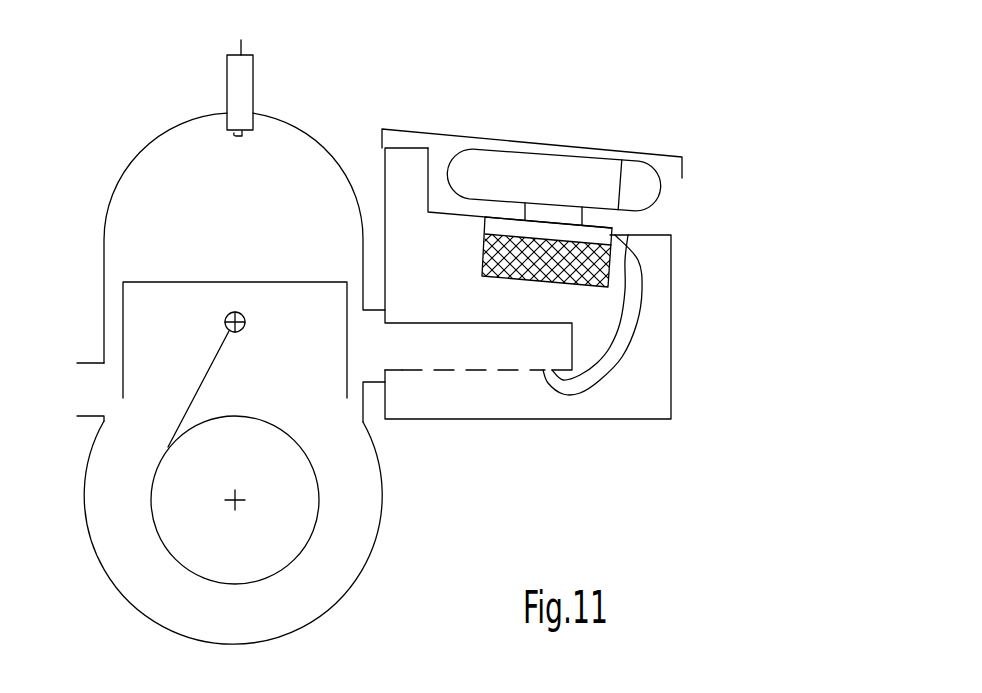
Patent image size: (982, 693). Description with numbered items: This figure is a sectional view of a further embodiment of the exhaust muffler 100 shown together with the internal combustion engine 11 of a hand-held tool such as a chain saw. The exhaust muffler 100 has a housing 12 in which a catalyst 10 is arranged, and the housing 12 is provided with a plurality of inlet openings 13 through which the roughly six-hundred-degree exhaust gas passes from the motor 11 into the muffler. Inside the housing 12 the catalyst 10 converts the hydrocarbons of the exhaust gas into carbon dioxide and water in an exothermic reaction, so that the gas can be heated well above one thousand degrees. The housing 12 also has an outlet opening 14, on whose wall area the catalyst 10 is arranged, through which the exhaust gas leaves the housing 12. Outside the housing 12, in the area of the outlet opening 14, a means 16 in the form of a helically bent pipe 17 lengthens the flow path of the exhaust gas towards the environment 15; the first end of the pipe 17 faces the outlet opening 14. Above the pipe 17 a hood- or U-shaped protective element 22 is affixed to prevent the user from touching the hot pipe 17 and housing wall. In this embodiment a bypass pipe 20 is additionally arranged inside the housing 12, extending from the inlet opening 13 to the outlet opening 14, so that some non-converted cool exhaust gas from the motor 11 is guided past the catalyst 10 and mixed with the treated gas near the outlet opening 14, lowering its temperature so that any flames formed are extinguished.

The exhaust muffler 100 is at (735, 222).
The catalyst 10 is at (605, 285).
The internal combustion engine 11 is at (320, 587).
The housing 12 is at (671, 392).
The inlet openings 13 is at (440, 372).
The outlet opening 14 is at (568, 222).
The environment 15 is at (797, 304).
The means for lengthening the flow path 16 is at (597, 148).
The helical bent pipe 17 is at (532, 156).
The bypass pipe 20 is at (632, 337).
The protective element 22 is at (447, 131).